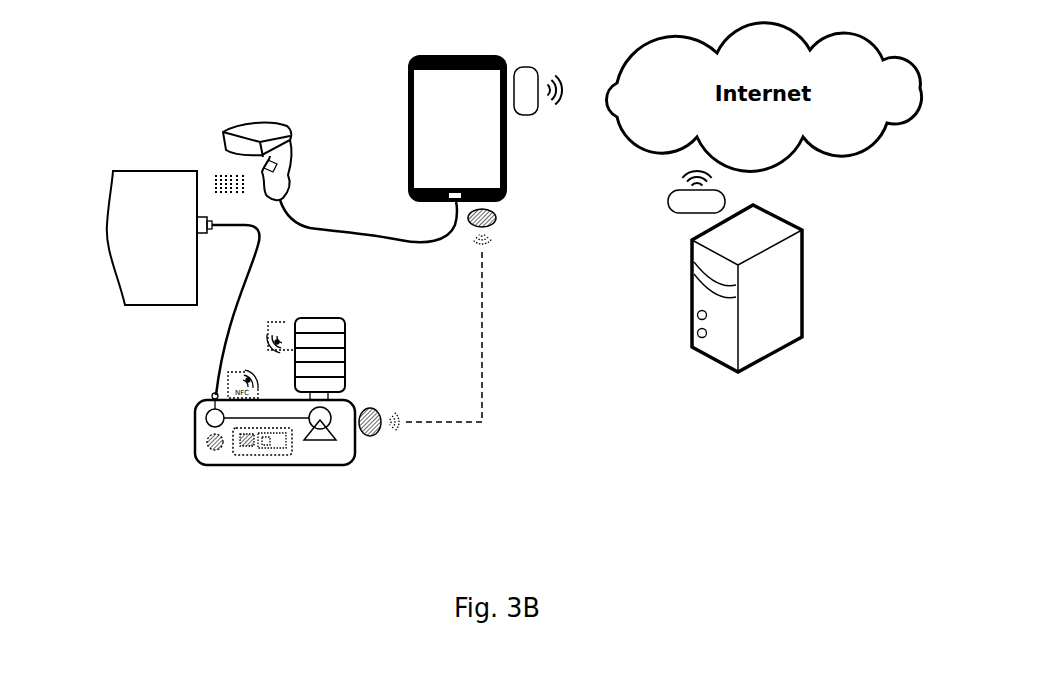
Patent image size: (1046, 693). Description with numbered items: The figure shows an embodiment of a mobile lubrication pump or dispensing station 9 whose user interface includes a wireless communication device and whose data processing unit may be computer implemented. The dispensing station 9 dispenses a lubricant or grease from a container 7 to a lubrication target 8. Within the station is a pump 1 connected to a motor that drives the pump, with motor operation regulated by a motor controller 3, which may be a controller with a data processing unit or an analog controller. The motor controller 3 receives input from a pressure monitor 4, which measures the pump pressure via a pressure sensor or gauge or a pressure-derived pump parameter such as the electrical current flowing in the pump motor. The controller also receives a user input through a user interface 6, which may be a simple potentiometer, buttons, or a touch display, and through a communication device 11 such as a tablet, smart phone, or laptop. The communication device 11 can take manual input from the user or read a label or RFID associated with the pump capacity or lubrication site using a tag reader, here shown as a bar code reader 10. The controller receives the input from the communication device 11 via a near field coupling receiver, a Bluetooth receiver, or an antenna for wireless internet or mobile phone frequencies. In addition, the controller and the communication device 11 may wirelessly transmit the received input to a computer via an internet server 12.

The pump 1 is at (342, 434).
The motor controller 3 is at (273, 455).
The pressure monitor 4 is at (195, 436).
The user interface 6 is at (214, 458).
The container 7 is at (357, 347).
The lubrication target 8 is at (145, 160).
The mobile lubrication pump or dispensing station 9 is at (122, 378).
The bar code reader 10 is at (303, 133).
The communication device 11 is at (520, 168).
The internet server 12 is at (682, 290).